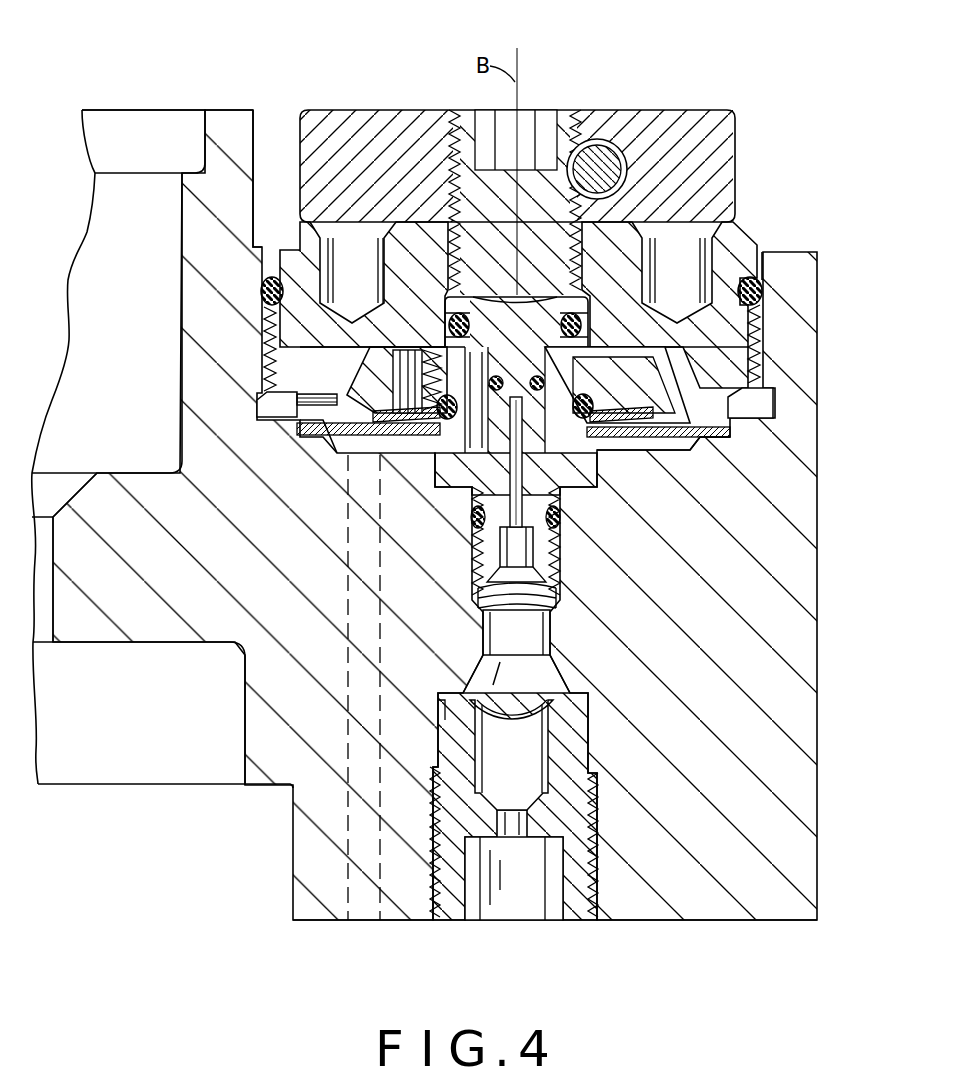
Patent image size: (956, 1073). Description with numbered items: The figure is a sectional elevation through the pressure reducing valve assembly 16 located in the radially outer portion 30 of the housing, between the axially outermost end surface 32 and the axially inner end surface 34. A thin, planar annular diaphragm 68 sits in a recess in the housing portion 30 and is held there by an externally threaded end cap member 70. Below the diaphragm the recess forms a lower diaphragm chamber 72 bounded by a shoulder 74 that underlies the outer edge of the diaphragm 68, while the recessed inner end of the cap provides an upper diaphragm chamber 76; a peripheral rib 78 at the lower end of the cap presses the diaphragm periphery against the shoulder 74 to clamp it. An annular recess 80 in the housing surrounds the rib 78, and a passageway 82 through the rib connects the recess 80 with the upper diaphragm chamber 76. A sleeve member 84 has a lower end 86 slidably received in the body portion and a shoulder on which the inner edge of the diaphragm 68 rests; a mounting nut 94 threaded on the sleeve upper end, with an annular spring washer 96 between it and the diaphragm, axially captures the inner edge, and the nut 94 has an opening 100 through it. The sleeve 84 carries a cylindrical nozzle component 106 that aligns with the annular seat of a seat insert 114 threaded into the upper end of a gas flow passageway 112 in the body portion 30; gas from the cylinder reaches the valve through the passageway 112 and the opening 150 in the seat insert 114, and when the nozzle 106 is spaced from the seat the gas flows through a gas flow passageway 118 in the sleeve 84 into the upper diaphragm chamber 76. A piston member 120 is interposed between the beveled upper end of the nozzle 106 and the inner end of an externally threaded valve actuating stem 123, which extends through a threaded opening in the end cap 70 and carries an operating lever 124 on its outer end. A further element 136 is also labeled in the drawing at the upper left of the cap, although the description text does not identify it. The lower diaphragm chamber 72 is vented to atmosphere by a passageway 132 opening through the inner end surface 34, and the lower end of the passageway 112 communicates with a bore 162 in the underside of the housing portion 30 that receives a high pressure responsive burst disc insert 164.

The pressure reducing valve assembly 16 is at (786, 178).
The radially outer portion of housing 30 is at (826, 440).
The axially outermost end surface 32 is at (218, 108).
The axially inner end surface 34 is at (682, 924).
The annular diaphragm 68 is at (668, 440).
The end cap member 70 is at (732, 340).
The lower diaphragm chamber 72 is at (633, 442).
The shoulder 74 is at (703, 438).
The upper diaphragm chamber 76 is at (676, 382).
The peripheral rib 78 is at (722, 412).
The annular recess 80 is at (276, 405).
The passageway 82 is at (317, 397).
The sleeve member 84 is at (586, 345).
The lower end of sleeve member 86 is at (440, 441).
The mounting nut 94 is at (436, 360).
The annular spring washer 96 is at (385, 537).
The opening 100 is at (397, 371).
The cylindrical nozzle component 106 is at (500, 546).
The gas flow passageway 112 is at (495, 623).
The seat insert 114 is at (562, 488).
The gas flow passageway 118 is at (470, 456).
The piston member 120 is at (582, 312).
The valve actuating stem 123 is at (477, 195).
The operating lever 124 is at (605, 122).
The passageway 132 is at (348, 825).
The cap 136 is at (257, 132).
The opening 150 is at (520, 532).
The bore 162 is at (590, 741).
The burst disc insert 164 is at (580, 812).